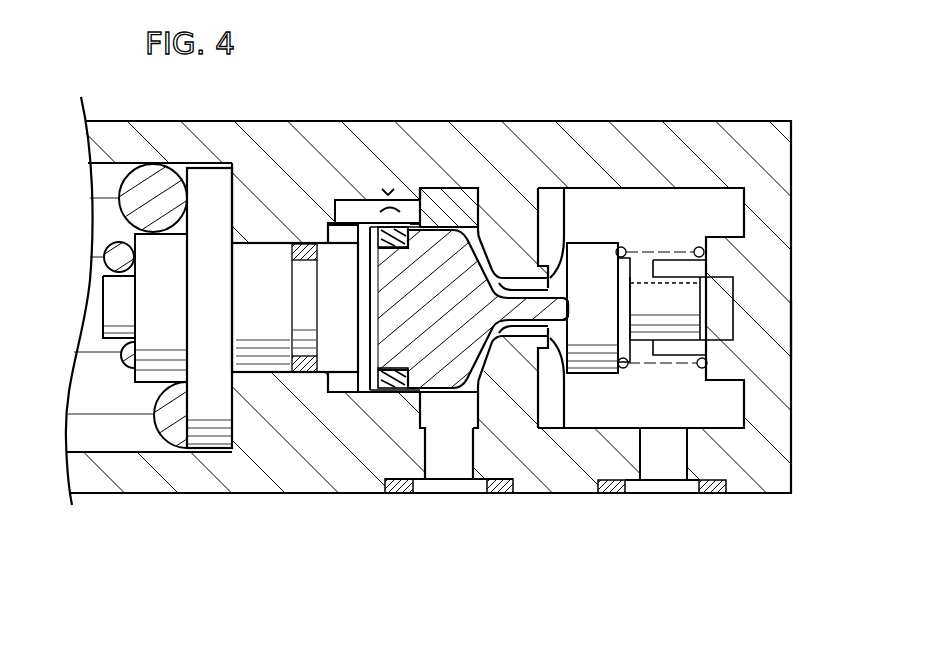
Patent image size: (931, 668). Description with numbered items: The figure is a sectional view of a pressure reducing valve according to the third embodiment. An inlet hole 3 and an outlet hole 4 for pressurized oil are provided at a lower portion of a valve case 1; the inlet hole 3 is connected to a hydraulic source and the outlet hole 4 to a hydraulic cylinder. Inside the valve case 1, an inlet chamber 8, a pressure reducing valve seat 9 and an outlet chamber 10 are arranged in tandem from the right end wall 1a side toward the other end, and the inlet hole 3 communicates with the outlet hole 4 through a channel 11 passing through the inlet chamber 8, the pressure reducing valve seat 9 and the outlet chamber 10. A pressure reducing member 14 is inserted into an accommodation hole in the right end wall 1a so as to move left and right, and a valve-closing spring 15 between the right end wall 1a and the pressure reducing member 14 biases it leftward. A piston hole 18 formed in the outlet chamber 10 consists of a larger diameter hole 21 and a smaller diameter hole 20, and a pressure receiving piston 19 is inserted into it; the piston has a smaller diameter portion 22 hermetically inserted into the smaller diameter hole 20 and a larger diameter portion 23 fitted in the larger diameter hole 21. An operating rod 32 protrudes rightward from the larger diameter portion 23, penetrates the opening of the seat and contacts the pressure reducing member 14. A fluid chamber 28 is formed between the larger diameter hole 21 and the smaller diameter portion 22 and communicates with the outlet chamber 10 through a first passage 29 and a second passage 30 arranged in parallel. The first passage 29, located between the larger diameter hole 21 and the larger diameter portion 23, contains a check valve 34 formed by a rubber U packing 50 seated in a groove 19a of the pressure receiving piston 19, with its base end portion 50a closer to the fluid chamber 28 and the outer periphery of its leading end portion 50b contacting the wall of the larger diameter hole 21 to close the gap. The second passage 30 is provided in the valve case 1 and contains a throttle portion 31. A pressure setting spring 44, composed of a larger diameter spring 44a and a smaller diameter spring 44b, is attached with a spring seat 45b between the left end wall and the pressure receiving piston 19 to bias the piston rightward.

The valve case 1 is at (684, 121).
The right end wall 1a is at (765, 338).
The inlet hole 3 is at (675, 487).
The outlet hole 4 is at (480, 486).
The inlet chamber 8 is at (588, 200).
The pressure reducing valve seat 9 is at (563, 188).
The outlet chamber 10 is at (470, 220).
The channel 11 is at (582, 263).
The pressure reducing member 14 is at (603, 253).
The valve-closing spring 15 is at (703, 247).
The piston hole 18 is at (295, 398).
The pressure receiving piston 19 is at (405, 399).
The groove 19a is at (408, 386).
The smaller diameter hole 20 is at (305, 373).
The larger diameter hole 21 is at (340, 377).
The smaller diameter portion 22 is at (350, 393).
The larger diameter portion 23 is at (368, 385).
The fluid chamber 28 is at (320, 240).
The first passage 29 is at (413, 219).
The second passage 30 is at (355, 196).
The throttle portion 31 is at (387, 186).
The operating rod 32 is at (568, 310).
The check valve 34 is at (392, 252).
The pressure setting spring 44 is at (396, 308).
The larger diameter spring 44a is at (178, 420).
The smaller diameter spring 44b is at (120, 345).
The spring seat 45b is at (222, 403).
The U packing 50 is at (449, 525).
The base end portion 50a is at (402, 482).
The leading end portion 50b is at (484, 508).